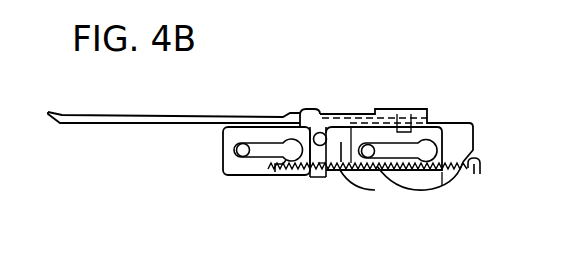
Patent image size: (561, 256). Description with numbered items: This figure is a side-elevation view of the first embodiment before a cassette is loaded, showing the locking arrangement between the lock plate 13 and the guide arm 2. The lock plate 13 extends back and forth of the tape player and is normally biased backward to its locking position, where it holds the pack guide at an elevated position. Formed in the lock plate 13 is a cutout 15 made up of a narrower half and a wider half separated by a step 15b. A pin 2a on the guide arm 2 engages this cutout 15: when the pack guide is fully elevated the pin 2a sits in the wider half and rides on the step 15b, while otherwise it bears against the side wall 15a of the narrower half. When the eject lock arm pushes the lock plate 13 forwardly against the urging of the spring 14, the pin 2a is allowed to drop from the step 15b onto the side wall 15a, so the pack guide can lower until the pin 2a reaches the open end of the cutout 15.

The guide arm 2 is at (462, 133).
The pin 2a is at (319, 132).
The lock plate 13 is at (227, 150).
The spring 14 is at (415, 188).
The cutout 15 is at (343, 146).
The side wall 15a is at (318, 165).
The step 15b is at (308, 170).